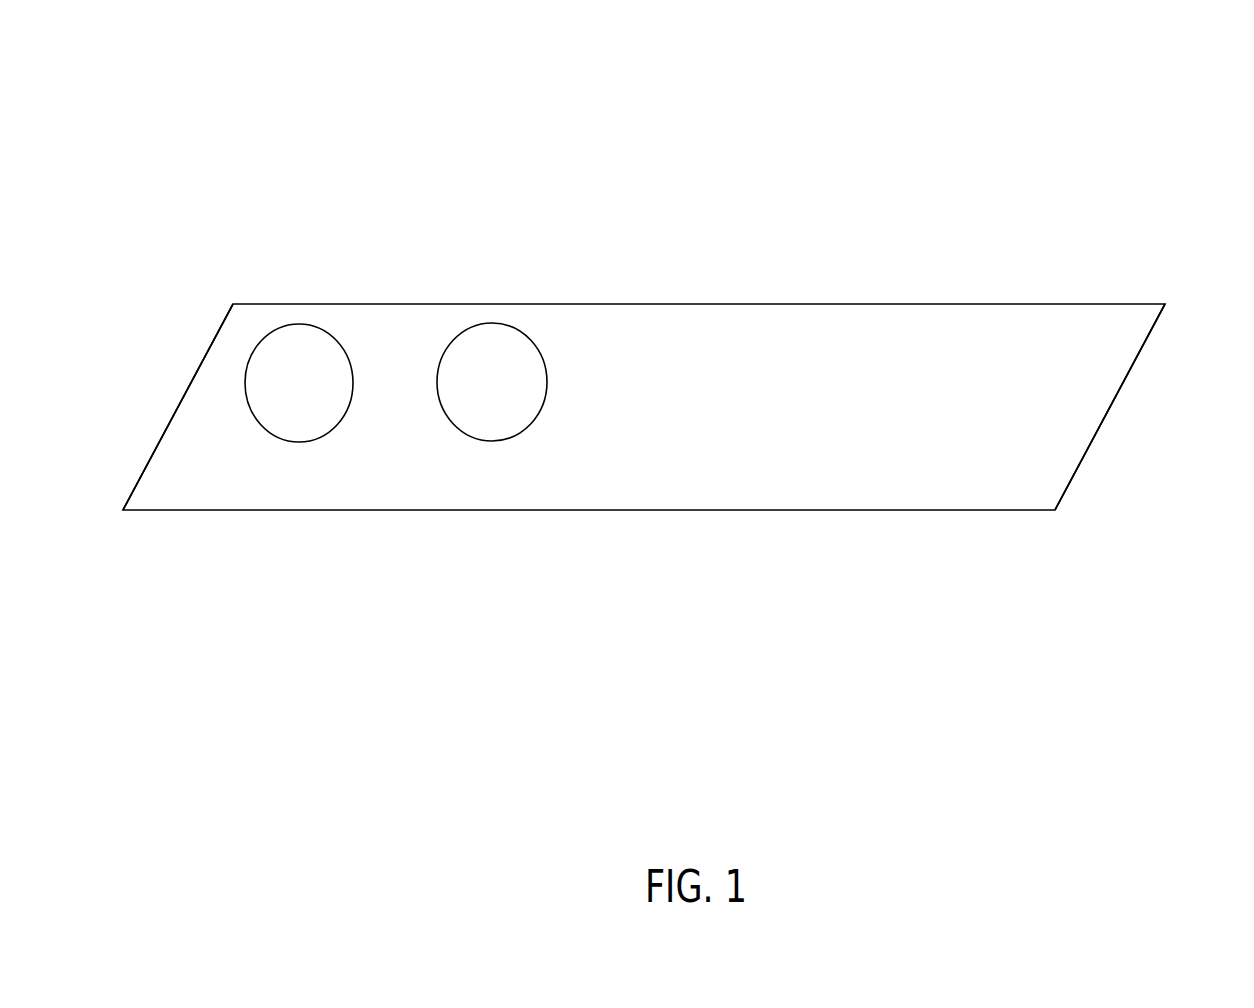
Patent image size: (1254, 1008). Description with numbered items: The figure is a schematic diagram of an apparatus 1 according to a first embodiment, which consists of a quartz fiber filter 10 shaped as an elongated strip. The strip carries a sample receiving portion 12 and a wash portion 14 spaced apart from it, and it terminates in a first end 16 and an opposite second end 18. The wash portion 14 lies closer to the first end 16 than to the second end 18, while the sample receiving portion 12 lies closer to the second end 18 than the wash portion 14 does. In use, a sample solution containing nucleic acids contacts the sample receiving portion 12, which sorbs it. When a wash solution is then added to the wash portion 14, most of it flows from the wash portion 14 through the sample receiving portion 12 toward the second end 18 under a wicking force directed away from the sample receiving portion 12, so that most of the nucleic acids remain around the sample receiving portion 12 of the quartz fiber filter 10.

The apparatus 1 is at (340, 100).
The quartz fiber filter 10 is at (222, 512).
The sample receiving portion 12 is at (490, 325).
The wash portion 14 is at (310, 323).
The first end 16 is at (222, 392).
The second end 18 is at (1043, 428).